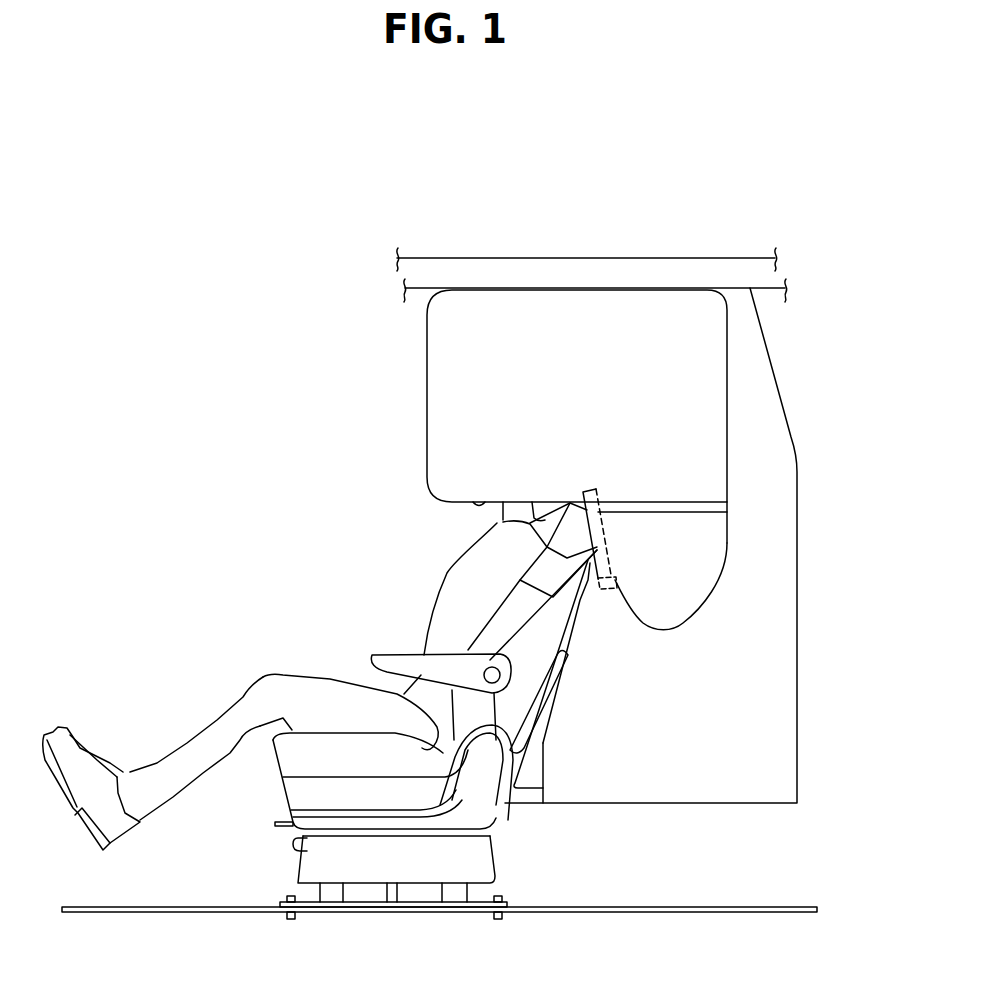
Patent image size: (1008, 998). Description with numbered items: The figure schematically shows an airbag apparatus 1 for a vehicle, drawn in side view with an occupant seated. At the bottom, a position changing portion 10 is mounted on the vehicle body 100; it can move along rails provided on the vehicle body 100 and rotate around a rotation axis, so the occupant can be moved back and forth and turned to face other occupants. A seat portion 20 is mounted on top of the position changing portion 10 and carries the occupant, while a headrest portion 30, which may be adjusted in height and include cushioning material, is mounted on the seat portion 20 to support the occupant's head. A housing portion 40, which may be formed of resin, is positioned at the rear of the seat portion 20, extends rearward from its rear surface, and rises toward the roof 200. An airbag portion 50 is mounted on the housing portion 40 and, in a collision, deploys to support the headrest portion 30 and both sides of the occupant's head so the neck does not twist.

The airbag apparatus 1 is at (848, 151).
The position changing portion 10 is at (486, 863).
The seat portion 20 is at (276, 791).
The headrest portion 30 is at (542, 510).
The housing portion 40 is at (799, 572).
The airbag portion 50 is at (420, 372).
The vehicle body 100 is at (757, 913).
The roof 200 is at (467, 269).